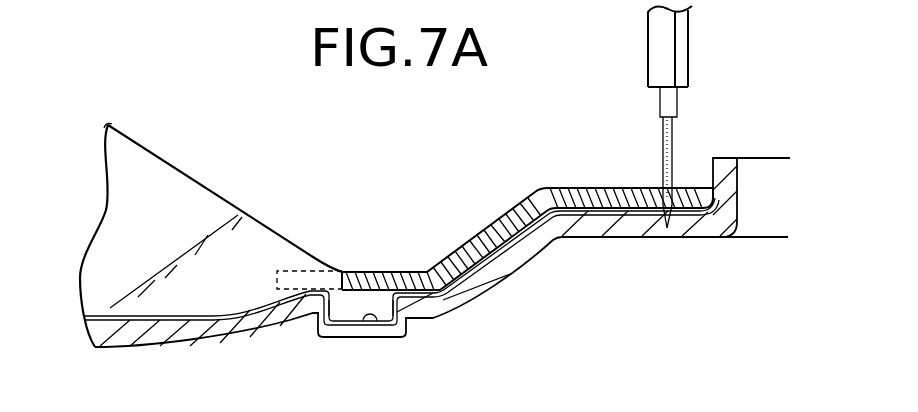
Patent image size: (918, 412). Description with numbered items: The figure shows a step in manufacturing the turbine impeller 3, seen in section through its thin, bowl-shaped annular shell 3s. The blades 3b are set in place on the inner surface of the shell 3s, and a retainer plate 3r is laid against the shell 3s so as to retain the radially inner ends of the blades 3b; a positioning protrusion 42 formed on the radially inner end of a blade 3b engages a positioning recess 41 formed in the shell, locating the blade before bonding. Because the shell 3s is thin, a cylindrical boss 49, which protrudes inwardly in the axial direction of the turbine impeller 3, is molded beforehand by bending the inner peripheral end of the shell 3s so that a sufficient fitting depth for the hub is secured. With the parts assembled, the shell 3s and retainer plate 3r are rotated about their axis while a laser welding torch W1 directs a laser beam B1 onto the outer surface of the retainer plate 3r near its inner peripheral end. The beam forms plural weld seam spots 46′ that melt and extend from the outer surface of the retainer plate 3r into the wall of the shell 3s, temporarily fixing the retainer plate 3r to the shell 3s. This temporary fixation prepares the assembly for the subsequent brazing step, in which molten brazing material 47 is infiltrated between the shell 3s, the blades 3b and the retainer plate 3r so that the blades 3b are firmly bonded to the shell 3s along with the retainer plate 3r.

The turbine impeller 3 is at (495, 193).
The blades 3b is at (180, 200).
The retainer plate 3r is at (522, 206).
The shell 3s is at (436, 304).
The molten brazing material 47 is at (342, 272).
The positioning protrusion 42 is at (347, 313).
The positioning recess 41 is at (380, 315).
The weld seam spots 46′ is at (637, 217).
The cylindrical boss 49 is at (735, 188).
The laser welding torch W1 is at (690, 117).
The laser beam B1 is at (662, 148).